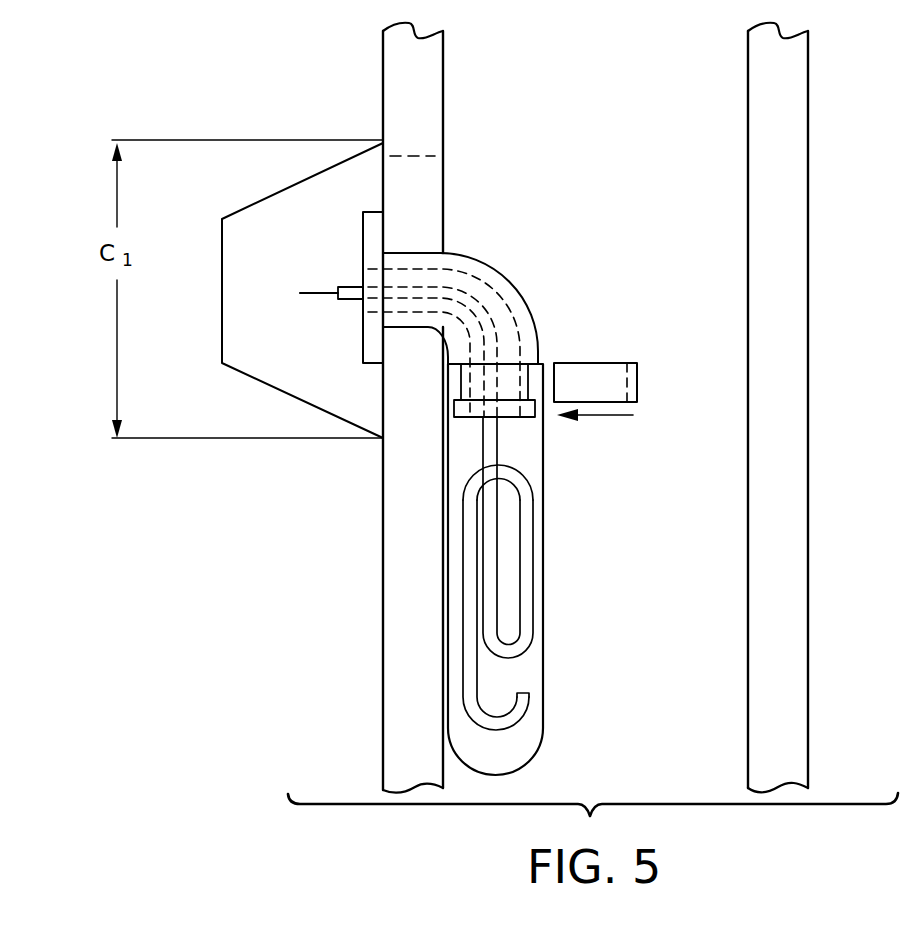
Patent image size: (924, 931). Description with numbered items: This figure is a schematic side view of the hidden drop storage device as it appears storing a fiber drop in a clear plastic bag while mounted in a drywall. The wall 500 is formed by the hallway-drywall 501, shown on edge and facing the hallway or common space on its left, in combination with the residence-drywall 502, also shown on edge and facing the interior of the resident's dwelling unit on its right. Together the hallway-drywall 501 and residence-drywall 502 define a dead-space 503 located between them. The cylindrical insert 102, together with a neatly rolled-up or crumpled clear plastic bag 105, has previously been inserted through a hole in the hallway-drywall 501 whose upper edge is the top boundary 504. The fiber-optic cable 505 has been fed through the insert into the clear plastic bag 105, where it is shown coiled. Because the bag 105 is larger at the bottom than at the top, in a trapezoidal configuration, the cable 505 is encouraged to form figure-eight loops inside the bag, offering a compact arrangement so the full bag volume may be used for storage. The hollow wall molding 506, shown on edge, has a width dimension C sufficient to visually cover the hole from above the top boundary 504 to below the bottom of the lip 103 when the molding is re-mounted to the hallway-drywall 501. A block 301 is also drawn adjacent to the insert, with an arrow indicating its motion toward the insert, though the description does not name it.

The wall 500 is at (150, 584).
The hallway-drywall 501 is at (383, 712).
The residence-drywall 502 is at (748, 700).
The dead-space 503 is at (692, 568).
The top boundary 504 is at (408, 157).
The fiber-optic cable 505 is at (484, 313).
The hollow wall molding 506 is at (222, 268).
The cylindrical insert 102 is at (478, 271).
The lip 103 is at (363, 352).
The clear plastic bag 105 is at (545, 514).
The mounting block 301 is at (588, 363).